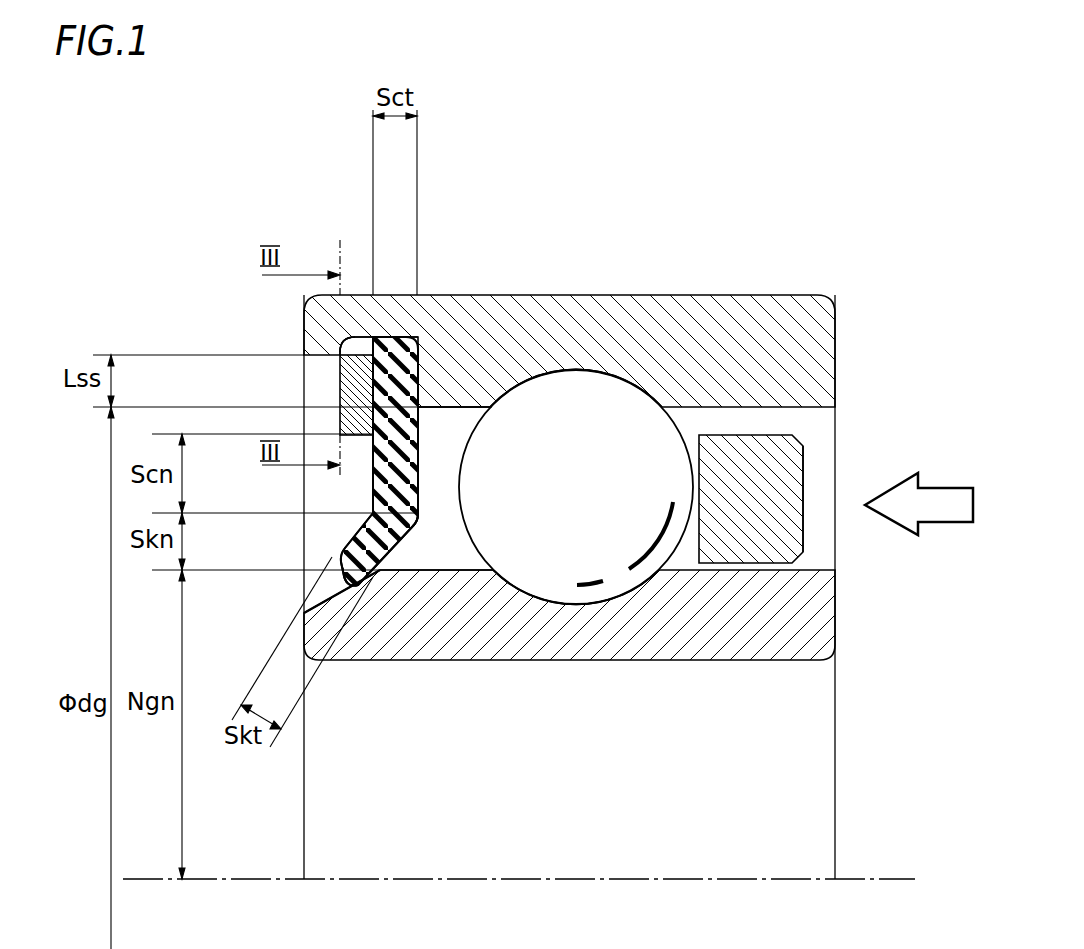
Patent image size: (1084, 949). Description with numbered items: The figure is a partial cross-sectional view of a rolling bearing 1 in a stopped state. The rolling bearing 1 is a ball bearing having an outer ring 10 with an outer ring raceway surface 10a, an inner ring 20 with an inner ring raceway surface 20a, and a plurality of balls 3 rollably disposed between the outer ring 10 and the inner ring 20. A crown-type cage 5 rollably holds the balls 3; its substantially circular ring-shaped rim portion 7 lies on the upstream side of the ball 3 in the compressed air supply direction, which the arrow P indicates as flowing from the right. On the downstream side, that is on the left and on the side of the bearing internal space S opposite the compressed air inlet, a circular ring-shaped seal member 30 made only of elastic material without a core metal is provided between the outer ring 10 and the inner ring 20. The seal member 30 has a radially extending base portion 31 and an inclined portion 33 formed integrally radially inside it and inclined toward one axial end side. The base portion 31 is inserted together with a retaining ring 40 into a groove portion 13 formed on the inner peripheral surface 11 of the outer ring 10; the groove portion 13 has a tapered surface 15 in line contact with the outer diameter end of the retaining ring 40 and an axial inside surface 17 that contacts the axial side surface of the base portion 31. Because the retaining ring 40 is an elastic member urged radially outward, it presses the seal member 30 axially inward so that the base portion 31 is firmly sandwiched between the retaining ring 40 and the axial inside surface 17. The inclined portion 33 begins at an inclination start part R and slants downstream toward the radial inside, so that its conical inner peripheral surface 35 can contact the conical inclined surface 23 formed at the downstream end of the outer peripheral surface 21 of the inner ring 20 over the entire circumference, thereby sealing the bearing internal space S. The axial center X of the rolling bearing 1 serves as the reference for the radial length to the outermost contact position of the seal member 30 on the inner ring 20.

The rolling bearing 1 is at (710, 222).
The balls 3 is at (622, 583).
The cage 5 is at (812, 466).
The rim portion 7 is at (803, 535).
The outer ring 10 is at (637, 292).
The outer ring raceway surface 10a is at (533, 396).
The inner peripheral surface 11 is at (466, 406).
The groove portion 13 is at (348, 352).
The tapered surface 15 is at (342, 352).
The axial inside surface 17 is at (411, 348).
The inner ring 20 is at (608, 665).
The inner ring raceway surface 20a is at (527, 576).
The outer peripheral surface 21 is at (458, 565).
The inclined surface 23 is at (322, 600).
The seal member 30 is at (361, 487).
The base portion 31 is at (372, 447).
The inclined portion 33 is at (355, 536).
The inner peripheral surface 35 is at (369, 582).
The retaining ring 40 is at (340, 394).
The bearing internal space S is at (763, 418).
The arrow P is at (944, 488).
The inclination start part R is at (421, 517).
The axial center X is at (878, 878).